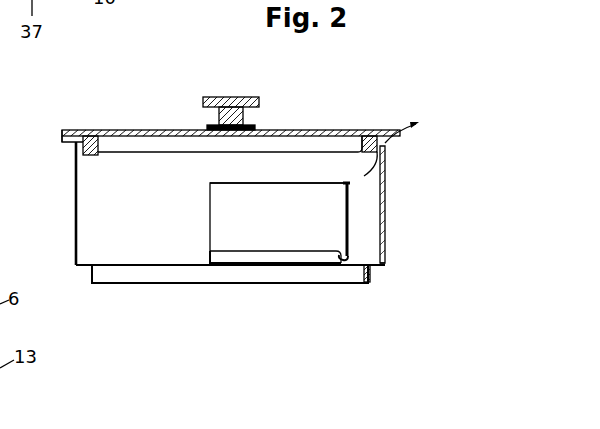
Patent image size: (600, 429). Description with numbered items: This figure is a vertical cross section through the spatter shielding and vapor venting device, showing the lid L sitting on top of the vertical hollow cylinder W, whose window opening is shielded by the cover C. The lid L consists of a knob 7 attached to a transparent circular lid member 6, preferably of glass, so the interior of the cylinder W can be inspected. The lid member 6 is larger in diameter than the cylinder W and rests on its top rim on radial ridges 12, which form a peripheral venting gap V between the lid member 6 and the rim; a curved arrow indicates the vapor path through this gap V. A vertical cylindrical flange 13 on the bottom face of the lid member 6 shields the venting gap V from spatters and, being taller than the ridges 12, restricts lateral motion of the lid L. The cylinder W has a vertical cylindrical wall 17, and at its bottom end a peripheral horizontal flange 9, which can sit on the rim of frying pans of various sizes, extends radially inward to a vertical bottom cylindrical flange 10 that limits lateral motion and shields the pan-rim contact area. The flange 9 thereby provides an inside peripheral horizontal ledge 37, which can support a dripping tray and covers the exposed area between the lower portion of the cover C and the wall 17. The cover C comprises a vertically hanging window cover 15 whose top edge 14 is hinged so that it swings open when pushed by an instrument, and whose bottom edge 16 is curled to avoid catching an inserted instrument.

The transparent circular lid member 6 is at (298, 130).
The knob 7 is at (230, 97).
The peripheral horizontal flange 9 is at (371, 268).
The vertical bottom cylindrical flange 10 is at (371, 280).
The radial ridges 12 is at (62, 141).
The vertical cylindrical flange 13 is at (122, 152).
The top edge 14 is at (297, 182).
The window cover 15 is at (265, 234).
The bottom edge 16 is at (248, 257).
The vertical cylindrical wall 17 is at (386, 204).
The inside peripheral horizontal ledge 37 is at (381, 262).
The lid L is at (150, 127).
The vertical hollow cylinder W is at (72, 232).
The peripheral venting gap V is at (392, 142).
The cover C is at (290, 212).